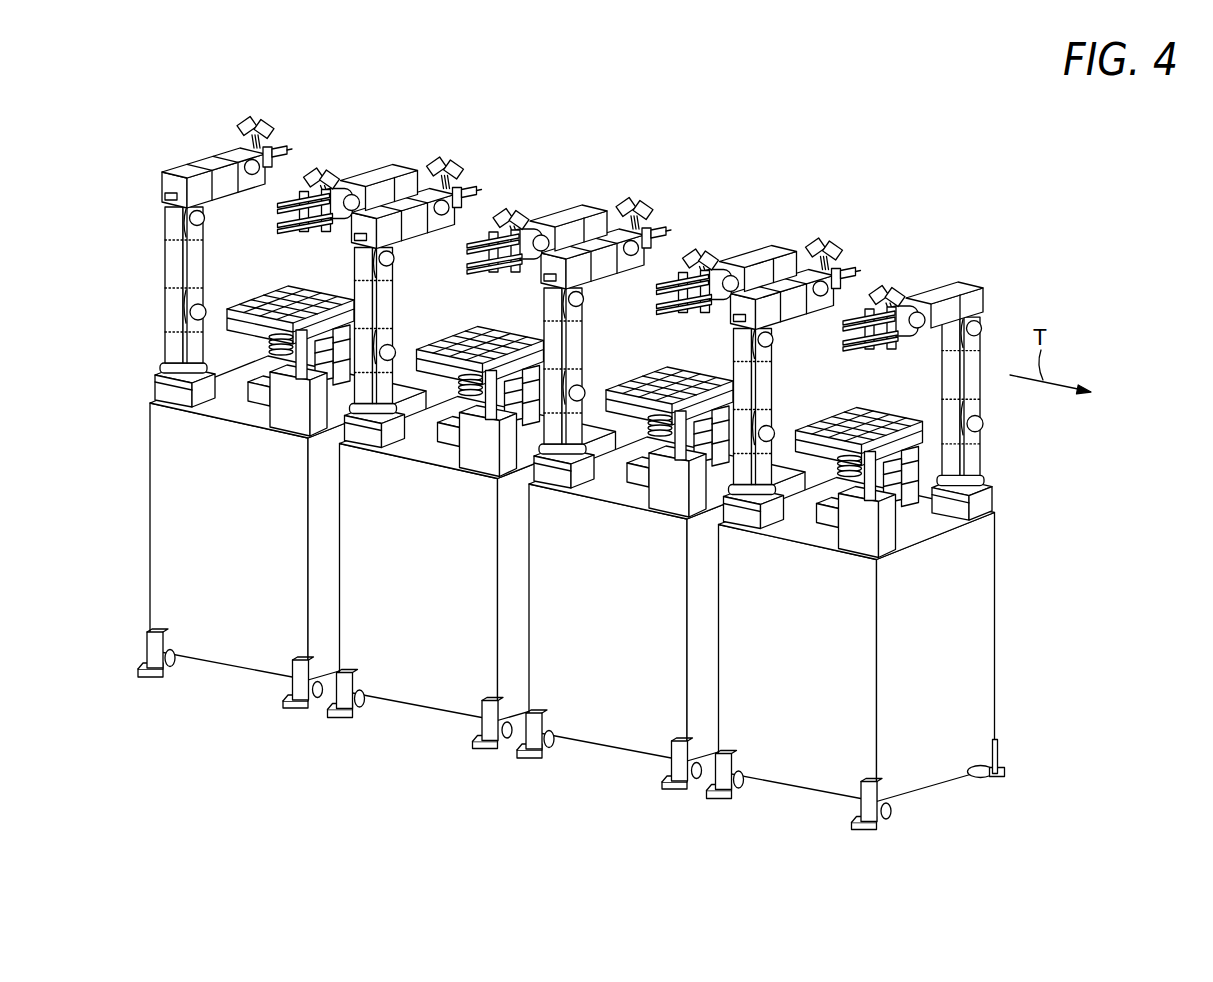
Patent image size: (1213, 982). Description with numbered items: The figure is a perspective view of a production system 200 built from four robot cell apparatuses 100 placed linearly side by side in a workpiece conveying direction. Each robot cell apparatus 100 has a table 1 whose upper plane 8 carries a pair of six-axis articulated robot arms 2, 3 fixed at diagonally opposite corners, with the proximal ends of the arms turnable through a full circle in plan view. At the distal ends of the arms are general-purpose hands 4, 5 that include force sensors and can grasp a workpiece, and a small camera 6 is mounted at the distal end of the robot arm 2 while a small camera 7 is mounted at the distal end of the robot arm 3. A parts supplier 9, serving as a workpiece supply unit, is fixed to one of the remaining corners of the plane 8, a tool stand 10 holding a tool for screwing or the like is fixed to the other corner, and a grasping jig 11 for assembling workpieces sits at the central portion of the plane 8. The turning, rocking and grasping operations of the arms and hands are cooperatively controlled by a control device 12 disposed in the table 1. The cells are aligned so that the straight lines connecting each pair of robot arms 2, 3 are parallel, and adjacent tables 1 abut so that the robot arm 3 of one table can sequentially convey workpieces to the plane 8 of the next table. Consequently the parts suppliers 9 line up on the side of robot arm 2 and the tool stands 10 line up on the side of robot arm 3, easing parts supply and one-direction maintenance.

The table 1 is at (231, 605).
The control device 12 is at (571, 729).
The robot arm 2 is at (170, 260).
The robot arm 3 is at (385, 161).
The hand 4 is at (281, 150).
The hand 5 is at (278, 213).
The small camera 6 is at (249, 118).
The small camera 7 is at (317, 165).
The plane 8 is at (236, 384).
The parts supplier 9 is at (258, 292).
The tool stand 10 is at (292, 412).
The grasping jig 11 is at (263, 398).
The robot cell apparatus 100 is at (558, 275).
The production system 200 is at (564, 435).